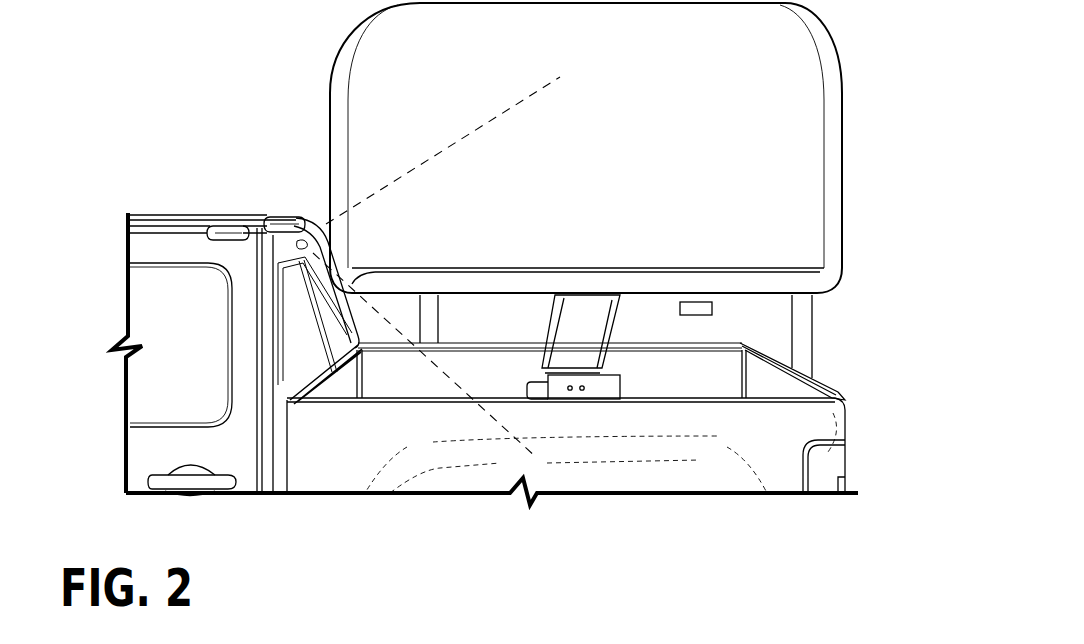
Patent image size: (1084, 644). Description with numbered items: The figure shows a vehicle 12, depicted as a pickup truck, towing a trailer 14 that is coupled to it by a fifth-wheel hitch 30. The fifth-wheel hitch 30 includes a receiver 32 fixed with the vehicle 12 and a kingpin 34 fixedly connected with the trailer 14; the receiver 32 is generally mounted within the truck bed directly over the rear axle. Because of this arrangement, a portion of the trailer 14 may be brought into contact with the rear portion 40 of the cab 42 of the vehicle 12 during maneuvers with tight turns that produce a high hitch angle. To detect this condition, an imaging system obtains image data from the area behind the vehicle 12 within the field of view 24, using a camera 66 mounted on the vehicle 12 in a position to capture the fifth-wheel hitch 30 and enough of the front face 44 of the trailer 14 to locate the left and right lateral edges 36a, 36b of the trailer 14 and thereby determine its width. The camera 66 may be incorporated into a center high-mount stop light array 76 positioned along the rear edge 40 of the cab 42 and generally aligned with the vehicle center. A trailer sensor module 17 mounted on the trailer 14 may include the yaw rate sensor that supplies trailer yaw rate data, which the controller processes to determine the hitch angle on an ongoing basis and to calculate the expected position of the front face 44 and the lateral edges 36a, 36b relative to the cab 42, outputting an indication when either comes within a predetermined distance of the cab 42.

The vehicle 12 is at (171, 241).
The trailer 14 is at (851, 184).
The trailer sensor module 17 is at (713, 310).
The field of view 24 is at (450, 380).
The fifth-wheel hitch 30 is at (626, 368).
The receiver 32 is at (592, 385).
The kingpin 34 is at (562, 337).
The left lateral edge 36a is at (330, 93).
The right lateral edge 36b is at (842, 107).
The rear portion of cab 40 is at (249, 228).
The cab 42 is at (338, 378).
The front face 44 is at (646, 128).
The camera 66 is at (307, 228).
The center high-mount stop light array 76 is at (310, 243).